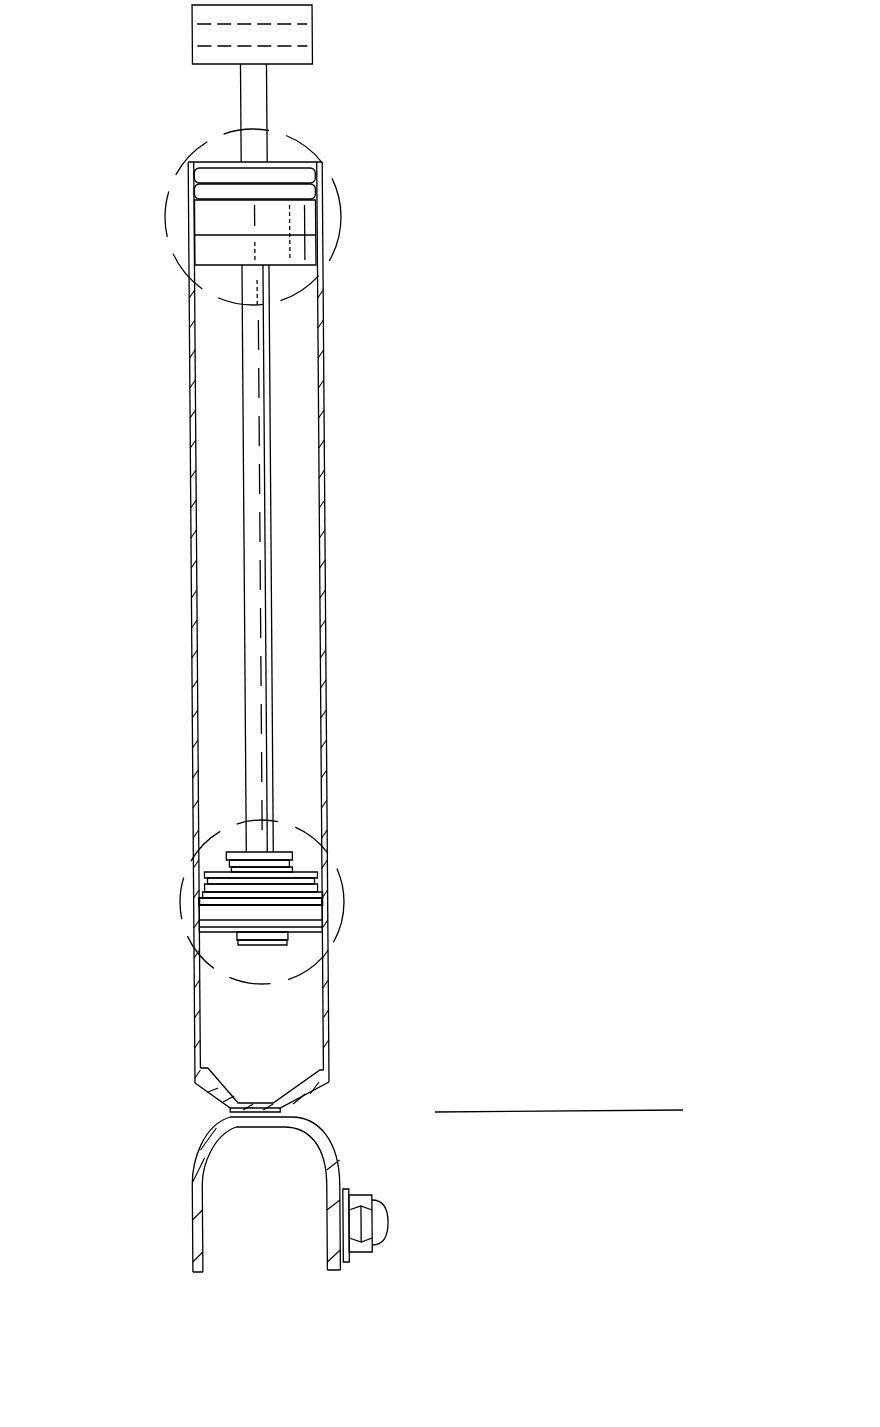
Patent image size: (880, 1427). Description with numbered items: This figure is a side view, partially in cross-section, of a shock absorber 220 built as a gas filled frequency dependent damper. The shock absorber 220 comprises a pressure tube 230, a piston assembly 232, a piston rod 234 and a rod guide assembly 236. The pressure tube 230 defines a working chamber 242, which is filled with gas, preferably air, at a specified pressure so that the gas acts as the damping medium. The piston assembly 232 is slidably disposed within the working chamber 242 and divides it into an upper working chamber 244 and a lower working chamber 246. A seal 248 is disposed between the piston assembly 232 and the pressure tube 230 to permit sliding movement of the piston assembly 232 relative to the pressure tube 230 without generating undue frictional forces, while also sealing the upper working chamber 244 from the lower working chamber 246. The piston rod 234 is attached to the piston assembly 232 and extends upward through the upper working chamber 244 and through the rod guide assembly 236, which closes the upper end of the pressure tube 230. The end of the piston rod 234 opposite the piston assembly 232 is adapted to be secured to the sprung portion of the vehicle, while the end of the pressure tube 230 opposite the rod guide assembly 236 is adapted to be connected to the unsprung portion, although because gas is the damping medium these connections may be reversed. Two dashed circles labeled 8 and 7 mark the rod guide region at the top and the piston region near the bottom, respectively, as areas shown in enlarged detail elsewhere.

The shock absorber 220 is at (413, 78).
The pressure tube 230 is at (324, 440).
The piston assembly 232 is at (300, 905).
The piston rod 234 is at (265, 657).
The rod guide assembly 236 is at (297, 220).
The working chamber 242 is at (285, 562).
The upper working chamber 244 is at (215, 407).
The lower working chamber 246 is at (233, 1028).
The seal 248 is at (212, 907).
The detail region of FIG. 7 is at (181, 880).
The detail region of FIG. 8 is at (161, 228).